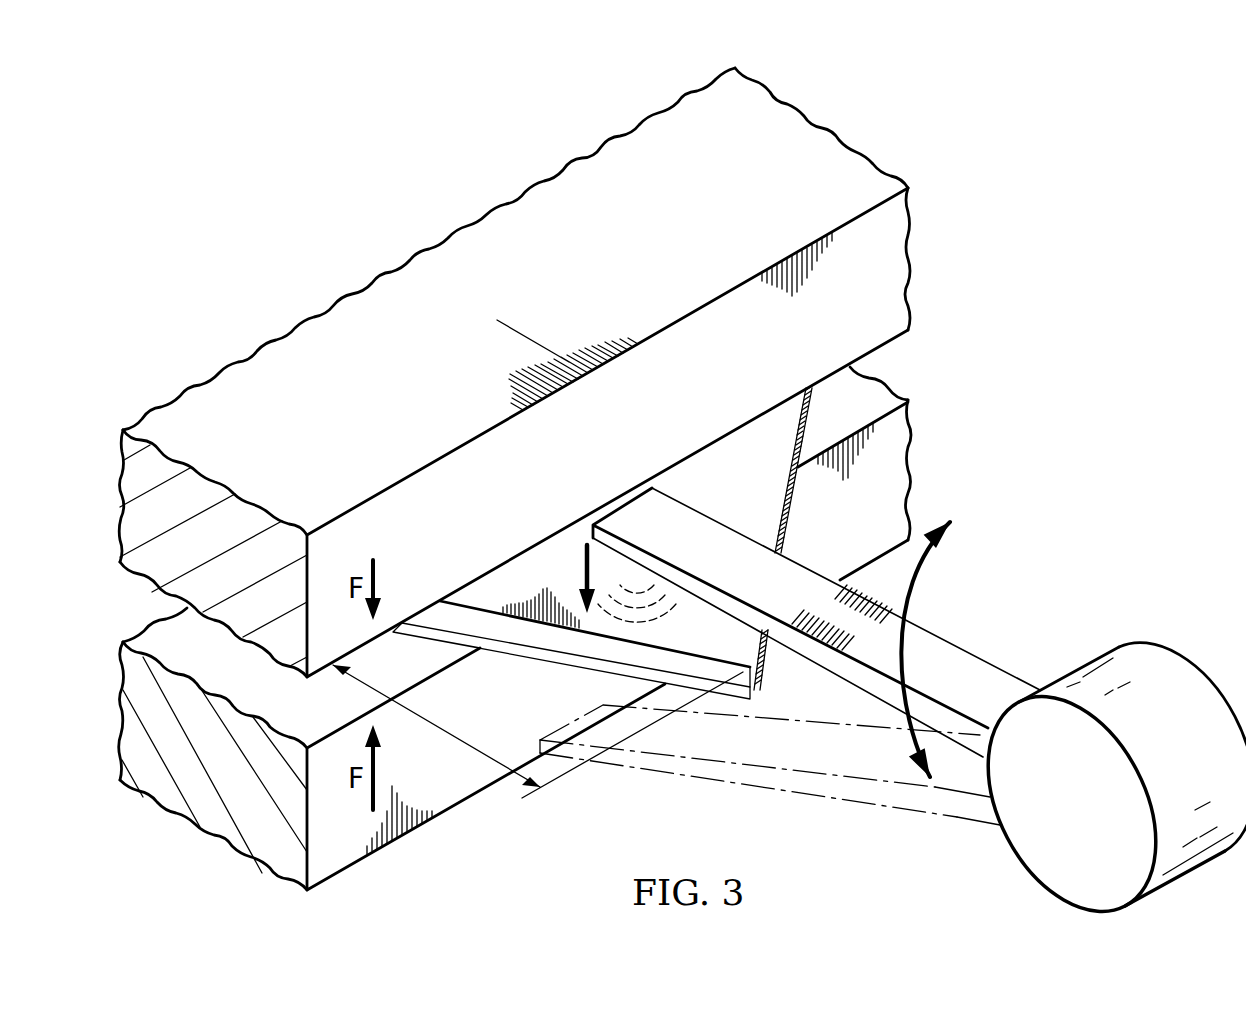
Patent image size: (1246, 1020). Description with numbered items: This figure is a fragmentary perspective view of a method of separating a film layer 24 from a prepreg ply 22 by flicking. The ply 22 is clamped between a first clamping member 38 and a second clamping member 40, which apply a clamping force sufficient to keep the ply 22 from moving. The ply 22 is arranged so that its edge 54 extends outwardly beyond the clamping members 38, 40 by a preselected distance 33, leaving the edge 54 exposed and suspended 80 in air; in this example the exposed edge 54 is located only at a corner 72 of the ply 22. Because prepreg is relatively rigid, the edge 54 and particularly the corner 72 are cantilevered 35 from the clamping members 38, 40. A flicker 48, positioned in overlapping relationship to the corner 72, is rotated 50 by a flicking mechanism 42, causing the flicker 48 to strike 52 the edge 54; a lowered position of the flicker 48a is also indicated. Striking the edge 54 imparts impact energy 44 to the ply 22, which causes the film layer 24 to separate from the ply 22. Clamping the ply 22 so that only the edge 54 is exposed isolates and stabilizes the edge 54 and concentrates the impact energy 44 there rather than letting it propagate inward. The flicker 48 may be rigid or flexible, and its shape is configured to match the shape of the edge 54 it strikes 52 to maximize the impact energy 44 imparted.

The ply 22 is at (505, 590).
The film layer 24 is at (415, 630).
The preselected distance 33 is at (448, 738).
The cantilevered 35 is at (800, 527).
The first clamping member 38 is at (908, 254).
The second clamping member 40 is at (908, 472).
The flicking mechanism 42 is at (1183, 872).
The impact energy 44 is at (625, 617).
The flicker 48 is at (987, 678).
The lever arm lowered position 48a is at (792, 795).
The rotated 50 is at (917, 590).
The strike 52 is at (583, 560).
The edge 54 is at (520, 633).
The corner 72 is at (733, 640).
The suspended 80 is at (766, 679).